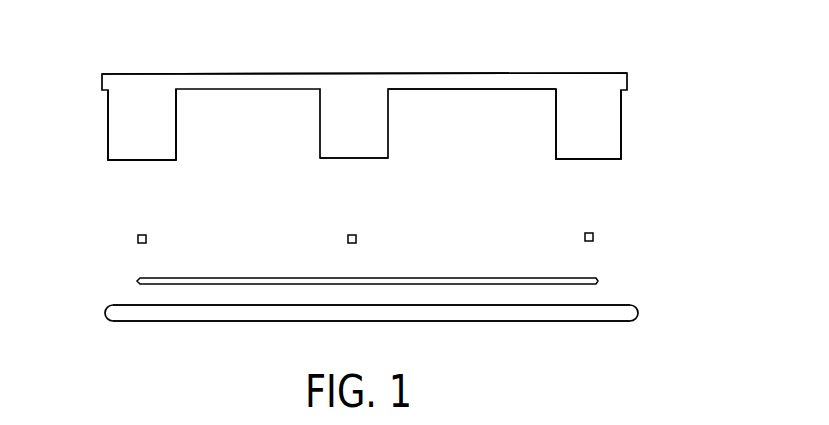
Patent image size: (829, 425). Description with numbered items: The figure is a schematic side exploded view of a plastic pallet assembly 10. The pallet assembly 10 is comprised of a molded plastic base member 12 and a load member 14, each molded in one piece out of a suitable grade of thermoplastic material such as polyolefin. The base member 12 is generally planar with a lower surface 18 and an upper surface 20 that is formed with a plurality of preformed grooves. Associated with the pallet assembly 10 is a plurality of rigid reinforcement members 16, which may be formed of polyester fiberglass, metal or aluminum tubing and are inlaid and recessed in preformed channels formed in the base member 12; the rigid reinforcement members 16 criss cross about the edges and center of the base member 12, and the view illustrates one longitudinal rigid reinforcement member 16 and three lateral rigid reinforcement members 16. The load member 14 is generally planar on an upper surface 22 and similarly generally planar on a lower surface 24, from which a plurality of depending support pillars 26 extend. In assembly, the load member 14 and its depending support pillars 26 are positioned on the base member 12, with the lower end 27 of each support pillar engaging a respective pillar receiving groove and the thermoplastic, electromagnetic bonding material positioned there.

The pallet assembly 10 is at (656, 72).
The base member 12 is at (118, 316).
The load member 14 is at (101, 77).
The rigid reinforcement member 16 is at (137, 240).
The lower surface 18 is at (540, 322).
The upper surface 20 is at (620, 303).
The upper surface 22 is at (428, 73).
The lower surface 24 is at (463, 89).
The support pillar 26 is at (125, 124).
The lower end 27 is at (155, 161).